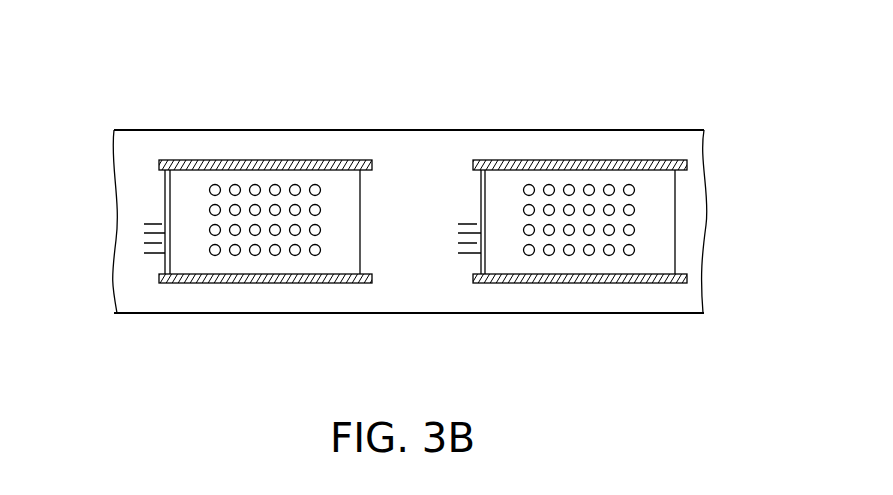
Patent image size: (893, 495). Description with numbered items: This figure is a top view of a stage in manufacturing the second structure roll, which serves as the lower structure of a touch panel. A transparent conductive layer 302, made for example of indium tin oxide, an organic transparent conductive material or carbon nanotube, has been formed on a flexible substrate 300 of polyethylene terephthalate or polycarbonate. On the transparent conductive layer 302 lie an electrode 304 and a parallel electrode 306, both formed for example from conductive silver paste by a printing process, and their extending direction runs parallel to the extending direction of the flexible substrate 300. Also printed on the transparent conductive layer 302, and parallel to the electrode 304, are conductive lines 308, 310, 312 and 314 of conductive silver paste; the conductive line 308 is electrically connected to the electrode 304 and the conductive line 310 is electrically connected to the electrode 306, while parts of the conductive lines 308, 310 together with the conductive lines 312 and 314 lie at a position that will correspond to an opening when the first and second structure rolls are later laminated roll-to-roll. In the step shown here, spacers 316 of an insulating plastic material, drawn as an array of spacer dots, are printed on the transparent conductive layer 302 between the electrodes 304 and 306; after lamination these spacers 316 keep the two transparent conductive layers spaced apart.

The flexible substrate 300 is at (697, 300).
The transparent conductive layer 302 is at (347, 206).
The electrode 304 is at (273, 283).
The electrode 306 is at (264, 160).
The conductive line 308 is at (165, 267).
The conductive line 310 is at (163, 183).
The conductive line 312 is at (150, 246).
The conductive line 314 is at (150, 223).
The spacers 316 is at (321, 250).